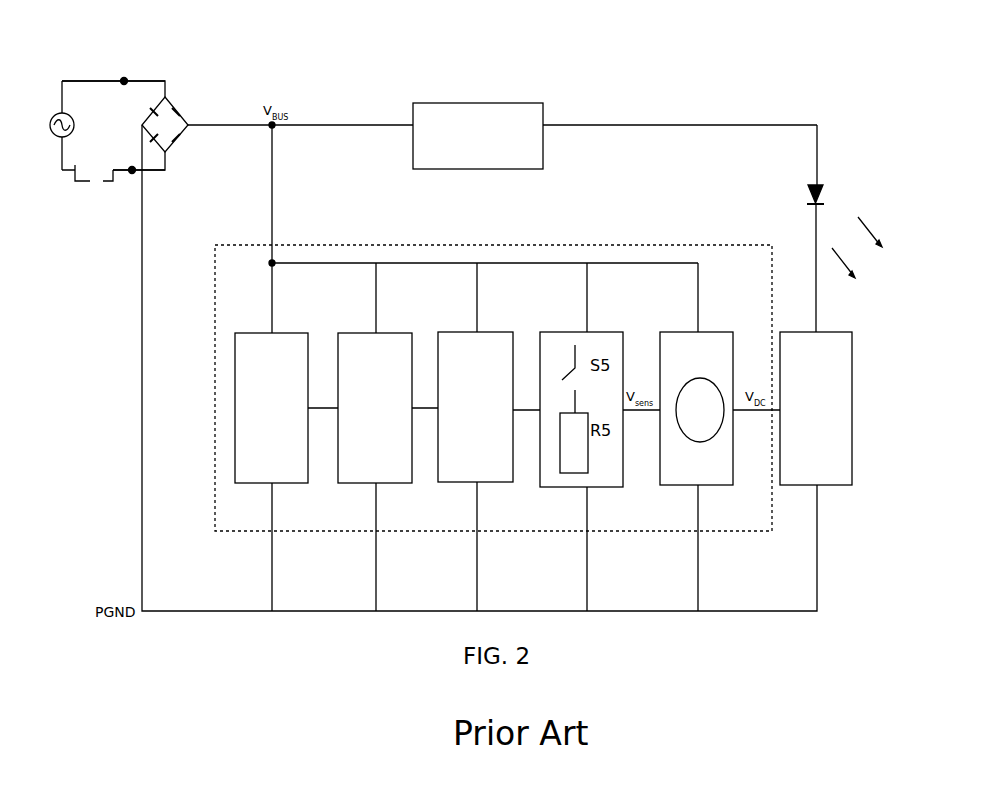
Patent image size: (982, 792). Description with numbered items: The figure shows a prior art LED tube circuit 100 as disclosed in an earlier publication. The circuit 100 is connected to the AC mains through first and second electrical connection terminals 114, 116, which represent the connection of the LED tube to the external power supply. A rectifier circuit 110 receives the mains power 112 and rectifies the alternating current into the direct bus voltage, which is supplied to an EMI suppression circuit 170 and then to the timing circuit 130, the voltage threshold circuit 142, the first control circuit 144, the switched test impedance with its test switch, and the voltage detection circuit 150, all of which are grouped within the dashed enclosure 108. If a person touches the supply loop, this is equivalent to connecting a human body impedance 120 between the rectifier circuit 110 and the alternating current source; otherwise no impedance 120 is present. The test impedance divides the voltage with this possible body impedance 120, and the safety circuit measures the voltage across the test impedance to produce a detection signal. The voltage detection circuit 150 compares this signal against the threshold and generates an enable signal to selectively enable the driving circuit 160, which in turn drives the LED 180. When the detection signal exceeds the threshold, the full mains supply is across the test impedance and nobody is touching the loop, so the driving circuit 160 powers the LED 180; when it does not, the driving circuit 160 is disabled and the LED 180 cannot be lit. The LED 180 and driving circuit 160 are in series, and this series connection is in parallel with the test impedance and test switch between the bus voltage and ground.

The LED tube circuit 100 is at (143, 58).
The control circuit 108 is at (742, 245).
The rectifier circuit 110 is at (178, 104).
The mains power 112 is at (62, 138).
The first electrical connection terminal 114 is at (123, 79).
The second electrical connection terminal 116 is at (132, 178).
The impedance 120 is at (93, 163).
The timing circuit 130 is at (292, 333).
The voltage threshold circuit 142 is at (392, 333).
The first control circuit 144 is at (497, 332).
The voltage detection circuit 150 is at (717, 332).
The driving circuit 160 is at (845, 332).
The EMI suppression circuit 170 is at (528, 103).
The LED 180 is at (823, 191).